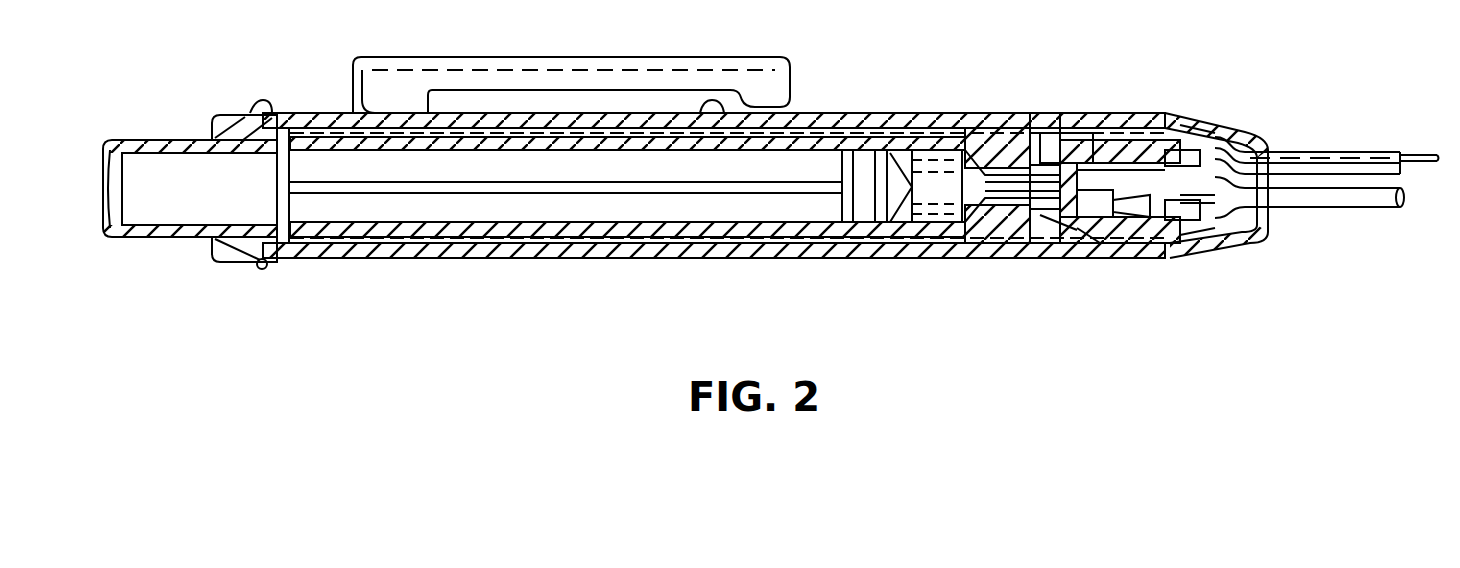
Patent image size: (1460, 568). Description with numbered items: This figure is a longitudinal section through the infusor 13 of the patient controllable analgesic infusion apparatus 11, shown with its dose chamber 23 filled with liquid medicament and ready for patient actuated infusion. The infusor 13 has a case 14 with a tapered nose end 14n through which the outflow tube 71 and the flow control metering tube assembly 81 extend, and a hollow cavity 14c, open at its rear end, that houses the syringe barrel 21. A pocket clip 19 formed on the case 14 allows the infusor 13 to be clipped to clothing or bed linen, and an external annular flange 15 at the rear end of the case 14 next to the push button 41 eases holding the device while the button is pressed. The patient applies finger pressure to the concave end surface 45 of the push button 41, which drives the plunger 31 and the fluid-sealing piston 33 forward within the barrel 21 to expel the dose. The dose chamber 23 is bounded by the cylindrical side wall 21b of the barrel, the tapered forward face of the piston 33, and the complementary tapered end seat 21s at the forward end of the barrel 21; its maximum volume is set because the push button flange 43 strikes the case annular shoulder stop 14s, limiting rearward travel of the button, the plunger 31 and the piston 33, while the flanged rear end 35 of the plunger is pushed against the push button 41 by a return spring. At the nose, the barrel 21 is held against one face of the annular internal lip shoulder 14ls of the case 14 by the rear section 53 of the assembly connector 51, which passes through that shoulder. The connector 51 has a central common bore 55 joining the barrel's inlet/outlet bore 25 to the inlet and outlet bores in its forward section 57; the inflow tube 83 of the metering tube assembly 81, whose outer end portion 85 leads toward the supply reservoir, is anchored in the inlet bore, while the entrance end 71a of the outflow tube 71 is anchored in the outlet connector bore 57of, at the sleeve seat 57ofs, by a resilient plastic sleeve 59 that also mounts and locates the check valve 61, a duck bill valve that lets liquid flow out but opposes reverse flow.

The patient controllable analgesic (PCA) infusion apparatus 11 is at (1262, 92).
The infusor 13 is at (613, 270).
The case 14 is at (792, 260).
The case annular shoulder stop 14s is at (272, 128).
The hollow cavity 14c is at (1235, 150).
The tapered nose end 14n is at (1240, 238).
The annular internal lip shoulder 14ls is at (1072, 135).
The external annular flange 15 is at (262, 270).
The pocket clip 19 is at (622, 56).
The syringe barrel 21 is at (913, 120).
The cylindrical side wall 21b is at (935, 150).
The tapered end seat 21s is at (940, 240).
The dose chamber 23 is at (926, 230).
The inlet/outlet bore 25 is at (1000, 176).
The plunger 31 is at (517, 202).
The piston 33 is at (867, 212).
The flanged rear end 35 is at (277, 164).
The push button 41 is at (183, 243).
The push button flange 43 is at (268, 250).
The concave end surface 45 is at (106, 185).
The assembly connector 51 is at (1158, 245).
The rear section of assembly connector 53 is at (1000, 243).
The central common bore 55 is at (1060, 170).
The forward section 57 is at (1166, 155).
The outlet connector bore 57of is at (1058, 255).
The outlet connector bore sleeve seat 57ofs is at (1080, 255).
The resilient plastic sleeve 59 is at (1100, 245).
The check valve 61 is at (1100, 200).
The outflow tube 71 is at (1370, 200).
The entrance end of outflow tube 71a is at (1196, 250).
The flow control metering tube assembly 81 is at (1392, 150).
The inflow tube 83 is at (1300, 152).
The sensor lead 85 is at (1420, 157).